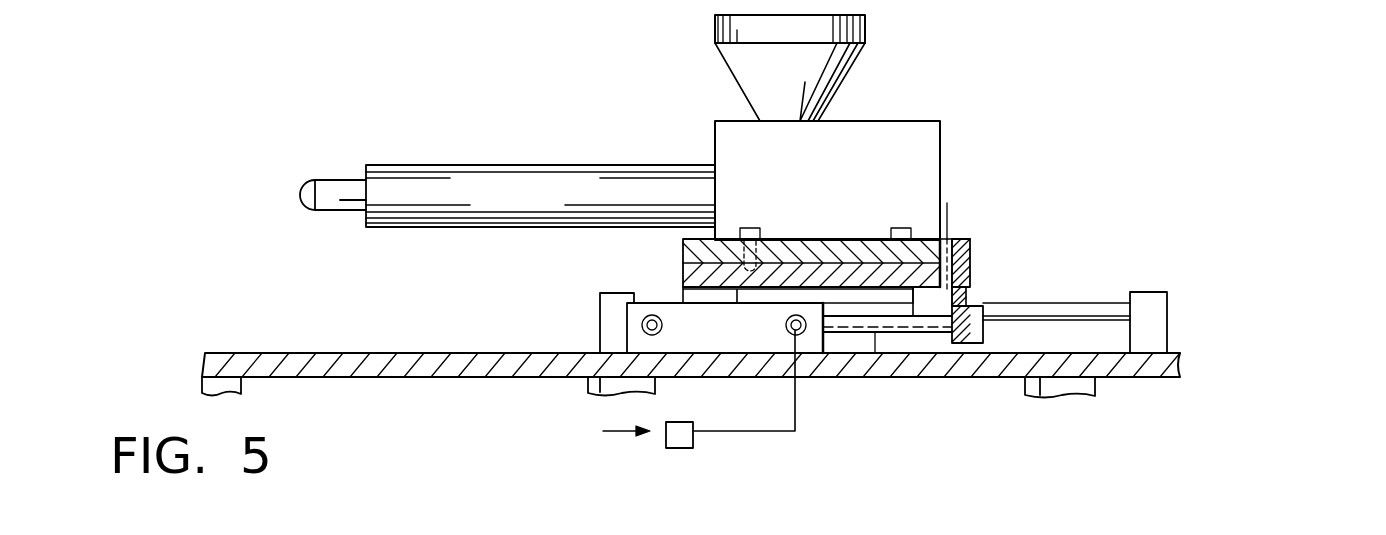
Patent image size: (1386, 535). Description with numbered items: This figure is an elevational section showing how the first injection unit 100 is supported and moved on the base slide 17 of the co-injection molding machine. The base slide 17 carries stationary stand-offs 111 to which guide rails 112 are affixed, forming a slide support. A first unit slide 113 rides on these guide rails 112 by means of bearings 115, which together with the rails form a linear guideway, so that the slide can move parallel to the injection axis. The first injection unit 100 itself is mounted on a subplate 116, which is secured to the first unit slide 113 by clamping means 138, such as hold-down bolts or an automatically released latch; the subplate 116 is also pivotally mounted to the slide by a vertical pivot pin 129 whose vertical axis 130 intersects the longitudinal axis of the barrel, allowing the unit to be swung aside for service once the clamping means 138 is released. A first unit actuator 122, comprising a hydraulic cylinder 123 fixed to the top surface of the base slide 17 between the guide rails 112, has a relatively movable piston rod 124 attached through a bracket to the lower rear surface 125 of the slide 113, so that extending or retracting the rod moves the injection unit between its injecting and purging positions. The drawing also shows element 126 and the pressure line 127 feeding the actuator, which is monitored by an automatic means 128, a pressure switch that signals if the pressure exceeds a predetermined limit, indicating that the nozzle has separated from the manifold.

The first injection unit 100 is at (880, 121).
The clamping means 138 is at (745, 238).
The vertical pivot pin 129 is at (938, 240).
The vertical axis 130 is at (948, 212).
The subplate 116 is at (969, 240).
The first unit slide 113 is at (969, 268).
The spacer 126 is at (967, 296).
The bearings 115 is at (683, 298).
The first unit actuator 122 is at (750, 341).
The hydraulic cylinder 123 is at (627, 325).
The piston rod 124 is at (875, 377).
The lower rear surface 125 is at (953, 377).
The guide rails 112 is at (1068, 303).
The stationary stand-offs 111 is at (1150, 292).
The base slide 17 is at (1173, 353).
The pressure line 127 is at (735, 432).
The automatic means 128 is at (677, 448).